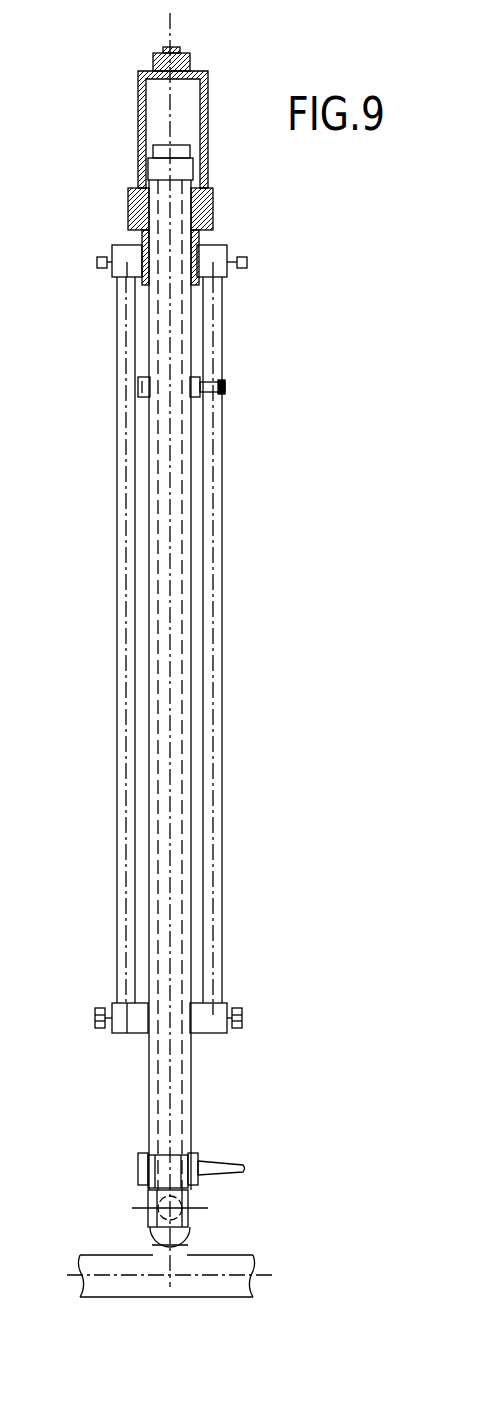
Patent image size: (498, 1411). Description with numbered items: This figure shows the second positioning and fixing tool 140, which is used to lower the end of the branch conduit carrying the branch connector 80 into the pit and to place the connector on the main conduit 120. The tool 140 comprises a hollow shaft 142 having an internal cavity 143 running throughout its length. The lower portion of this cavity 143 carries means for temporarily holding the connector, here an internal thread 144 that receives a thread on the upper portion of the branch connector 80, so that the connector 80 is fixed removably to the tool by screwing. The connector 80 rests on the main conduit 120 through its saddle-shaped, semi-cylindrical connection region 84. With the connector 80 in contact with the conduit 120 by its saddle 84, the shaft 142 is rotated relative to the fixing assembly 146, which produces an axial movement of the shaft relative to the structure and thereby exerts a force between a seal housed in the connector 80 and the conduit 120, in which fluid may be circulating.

The second positioning and fixing tool 140 is at (222, 725).
The hollow shaft 142 is at (180, 568).
The internal cavity 143 is at (168, 913).
The fixing assembly 146 is at (220, 368).
The internal thread 144 is at (172, 1165).
The branch connector 80 is at (177, 1238).
The semi-cylindrical connection region 84 is at (150, 1255).
The main conduit 120 is at (215, 1287).